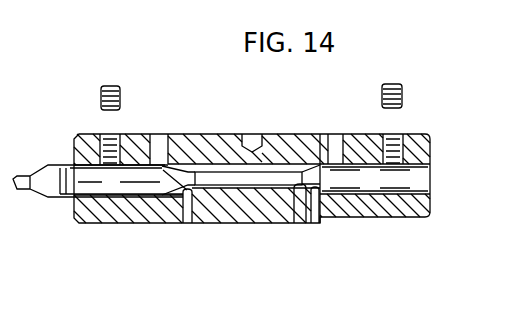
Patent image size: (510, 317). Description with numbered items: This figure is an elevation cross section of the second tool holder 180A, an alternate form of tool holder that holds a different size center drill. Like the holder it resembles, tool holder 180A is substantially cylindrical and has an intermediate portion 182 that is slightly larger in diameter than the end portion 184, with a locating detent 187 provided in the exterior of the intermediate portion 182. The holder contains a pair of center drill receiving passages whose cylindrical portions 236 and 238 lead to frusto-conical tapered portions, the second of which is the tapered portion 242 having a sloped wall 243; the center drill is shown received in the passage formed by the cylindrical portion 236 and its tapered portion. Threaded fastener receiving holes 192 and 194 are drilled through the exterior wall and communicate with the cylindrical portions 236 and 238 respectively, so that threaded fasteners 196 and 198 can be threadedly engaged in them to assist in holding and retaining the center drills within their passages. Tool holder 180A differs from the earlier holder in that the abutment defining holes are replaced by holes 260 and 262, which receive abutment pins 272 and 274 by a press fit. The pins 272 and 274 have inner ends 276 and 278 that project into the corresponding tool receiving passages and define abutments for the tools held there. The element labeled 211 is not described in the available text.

The second tool holder 180A is at (258, 240).
The intermediate portion 182 is at (212, 134).
The end portion 184 is at (124, 223).
The locating detent 187 is at (254, 133).
The threaded fastener receiving hole 192 is at (99, 132).
The threaded fastener receiving hole 194 is at (394, 136).
The threaded fastener 196 is at (112, 86).
The threaded fastener 198 is at (388, 84).
The spacer 211 is at (158, 133).
The cylindrical portion 236 is at (100, 223).
The cylindrical portion 238 is at (432, 187).
The frusto-conical tapered portion 242 is at (321, 133).
The sloped wall 243 is at (300, 223).
The hole 260 is at (208, 223).
The hole 262 is at (331, 215).
The abutment pin 272 is at (186, 222).
The abutment pin 274 is at (337, 212).
The inner end 276 is at (163, 166).
The inner end 278 is at (323, 183).